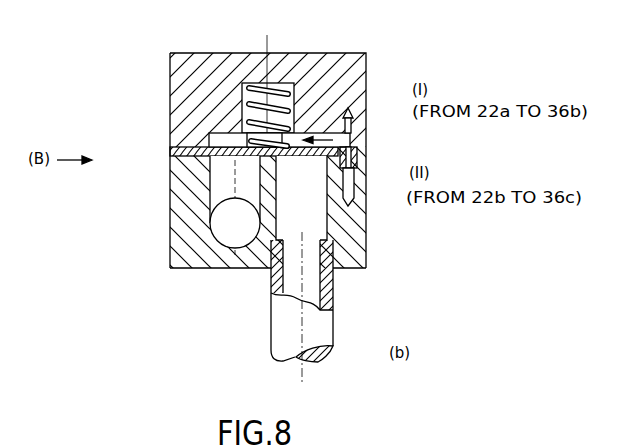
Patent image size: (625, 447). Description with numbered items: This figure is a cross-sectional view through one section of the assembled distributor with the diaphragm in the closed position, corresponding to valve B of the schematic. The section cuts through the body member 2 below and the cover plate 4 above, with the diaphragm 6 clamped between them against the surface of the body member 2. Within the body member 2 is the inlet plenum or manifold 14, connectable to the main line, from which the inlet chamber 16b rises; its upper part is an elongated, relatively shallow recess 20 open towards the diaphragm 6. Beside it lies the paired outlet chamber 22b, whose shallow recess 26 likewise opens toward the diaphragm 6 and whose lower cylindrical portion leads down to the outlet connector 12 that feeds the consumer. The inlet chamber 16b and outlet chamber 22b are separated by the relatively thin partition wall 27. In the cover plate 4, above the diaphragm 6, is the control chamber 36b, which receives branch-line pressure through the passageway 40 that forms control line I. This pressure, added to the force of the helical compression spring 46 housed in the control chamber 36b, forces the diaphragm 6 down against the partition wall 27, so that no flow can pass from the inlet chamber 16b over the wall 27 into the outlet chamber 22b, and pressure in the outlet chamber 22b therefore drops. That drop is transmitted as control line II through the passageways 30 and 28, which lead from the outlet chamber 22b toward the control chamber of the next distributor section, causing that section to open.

The body member 2 is at (170, 210).
The cover plate 4 is at (176, 92).
The diaphragm 6 is at (172, 152).
The outlet connector 12 is at (323, 333).
The inlet plenum or manifold 14 is at (232, 233).
The inlet chamber 16b is at (192, 203).
The recess 20 is at (196, 171).
The outlet chamber 22b is at (341, 236).
The recess 26 is at (311, 165).
The partition wall 27 is at (253, 164).
The passageway 28 is at (358, 178).
The passageway 30 is at (326, 178).
The control chamber 36b is at (209, 138).
The passageway 40 is at (355, 112).
The helical compression spring 46 is at (277, 82).